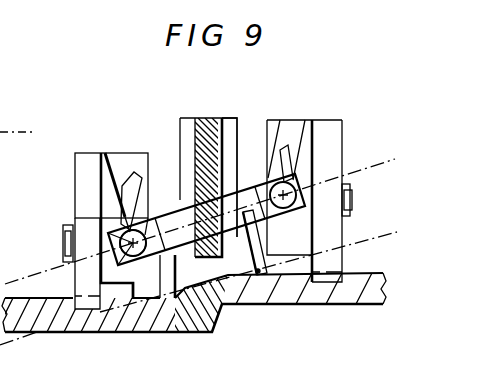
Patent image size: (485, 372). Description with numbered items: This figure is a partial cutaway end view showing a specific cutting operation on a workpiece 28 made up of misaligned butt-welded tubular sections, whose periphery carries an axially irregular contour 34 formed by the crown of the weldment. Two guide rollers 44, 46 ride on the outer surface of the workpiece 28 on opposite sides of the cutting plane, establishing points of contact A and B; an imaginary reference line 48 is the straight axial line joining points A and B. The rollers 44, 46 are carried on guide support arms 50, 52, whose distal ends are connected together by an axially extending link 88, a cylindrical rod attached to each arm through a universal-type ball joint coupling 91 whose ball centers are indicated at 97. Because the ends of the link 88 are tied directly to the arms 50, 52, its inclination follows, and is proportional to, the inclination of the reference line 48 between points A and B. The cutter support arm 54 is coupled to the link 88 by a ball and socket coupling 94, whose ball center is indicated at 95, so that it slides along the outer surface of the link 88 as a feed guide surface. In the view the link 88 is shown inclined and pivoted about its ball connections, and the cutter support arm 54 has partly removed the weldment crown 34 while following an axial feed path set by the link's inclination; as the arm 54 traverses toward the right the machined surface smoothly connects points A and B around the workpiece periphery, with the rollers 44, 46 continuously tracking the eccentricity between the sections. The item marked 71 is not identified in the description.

The workpiece 28 is at (128, 330).
The axially irregular peripheral contour 34 is at (228, 320).
The guide roller 44 is at (143, 187).
The guide roller 46 is at (290, 118).
The imaginary reference line 48 is at (35, 333).
The guide support arm 50 is at (88, 157).
The guide support arm 52 is at (330, 120).
The cutter support arm 54 is at (198, 118).
The link 88 is at (107, 230).
The ball joint coupling 91 is at (63, 252).
The ball and socket coupling 94 is at (192, 210).
The center of ball element of ball and socket connection 95 is at (235, 190).
The centers of ball elements of ball joint couplings 97 is at (110, 238).
The member 71 is at (368, 371).
The point A is at (158, 300).
The point B is at (257, 272).